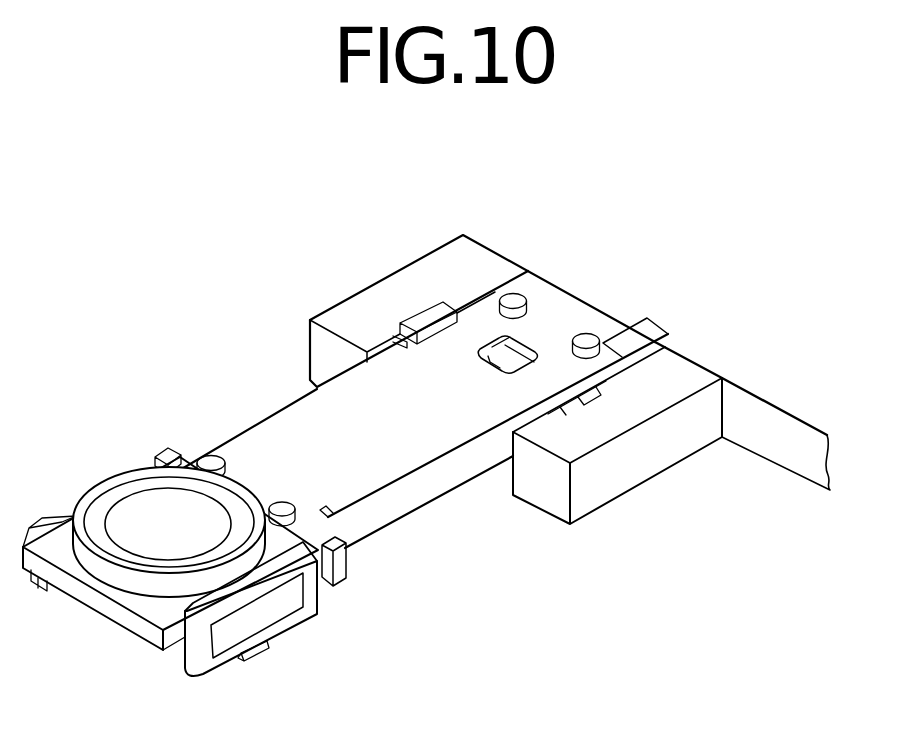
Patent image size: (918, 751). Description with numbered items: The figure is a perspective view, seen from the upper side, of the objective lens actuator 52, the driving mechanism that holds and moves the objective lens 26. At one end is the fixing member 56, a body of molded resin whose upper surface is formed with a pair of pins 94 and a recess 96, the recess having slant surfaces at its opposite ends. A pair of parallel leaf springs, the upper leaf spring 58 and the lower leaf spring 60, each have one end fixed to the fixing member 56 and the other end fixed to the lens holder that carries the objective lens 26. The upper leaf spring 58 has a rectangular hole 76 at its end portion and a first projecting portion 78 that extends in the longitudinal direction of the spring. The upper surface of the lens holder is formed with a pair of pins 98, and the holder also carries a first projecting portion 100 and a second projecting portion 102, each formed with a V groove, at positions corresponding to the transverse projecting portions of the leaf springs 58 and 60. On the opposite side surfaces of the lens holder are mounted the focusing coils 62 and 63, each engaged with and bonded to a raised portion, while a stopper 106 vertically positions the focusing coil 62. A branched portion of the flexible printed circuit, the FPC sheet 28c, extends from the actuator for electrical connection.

The objective lens 26 is at (130, 506).
The FPC sheet 28c is at (772, 418).
The objective lens actuator 52 is at (566, 280).
The fixing member 56 is at (636, 475).
The upper leaf spring 58 is at (306, 397).
The lower leaf spring 60 is at (428, 493).
The focusing coil 62 is at (292, 624).
The focusing coil 63 is at (56, 515).
The rectangular hole 76 is at (497, 361).
The first projecting portion 78 is at (655, 323).
The pins 94 is at (512, 296).
The recess 96 is at (490, 345).
The pins 98 is at (211, 458).
The first projecting portion 100 is at (347, 568).
The second projecting portion 102 is at (166, 454).
The stopper 106 is at (253, 661).